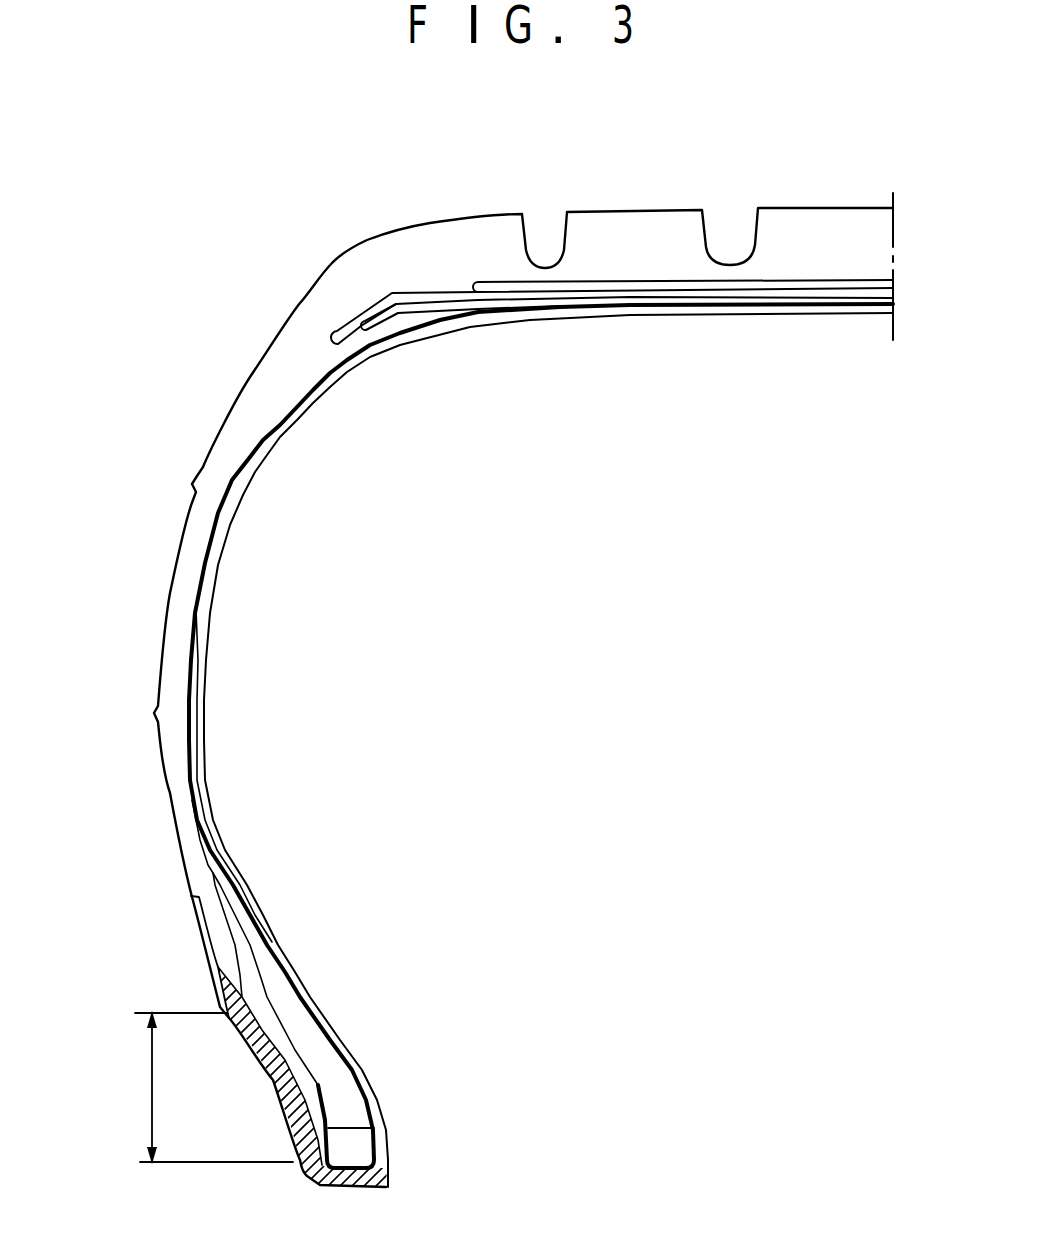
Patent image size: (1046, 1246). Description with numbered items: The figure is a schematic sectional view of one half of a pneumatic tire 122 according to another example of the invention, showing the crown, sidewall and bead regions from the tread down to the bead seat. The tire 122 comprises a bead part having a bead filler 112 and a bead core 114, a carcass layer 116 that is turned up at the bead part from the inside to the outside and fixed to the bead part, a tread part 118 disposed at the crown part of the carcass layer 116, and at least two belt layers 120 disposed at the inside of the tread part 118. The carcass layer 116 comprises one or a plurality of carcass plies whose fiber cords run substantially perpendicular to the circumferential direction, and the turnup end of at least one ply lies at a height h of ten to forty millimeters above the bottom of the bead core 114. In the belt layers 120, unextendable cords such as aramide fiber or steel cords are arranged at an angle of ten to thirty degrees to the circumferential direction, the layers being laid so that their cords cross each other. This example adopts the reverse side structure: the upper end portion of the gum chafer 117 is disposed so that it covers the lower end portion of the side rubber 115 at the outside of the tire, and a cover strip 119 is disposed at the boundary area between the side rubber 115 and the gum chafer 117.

The bead filler 112 is at (312, 1050).
The bead core 114 is at (360, 1150).
The side rubber 115 is at (170, 793).
The carcass layer 116 is at (240, 490).
The gum chafer 117 is at (293, 1113).
The tread part 118 is at (805, 207).
The cover strip 119 is at (200, 933).
The belt layers 120 is at (505, 297).
The pneumatic tire 122 is at (298, 192).